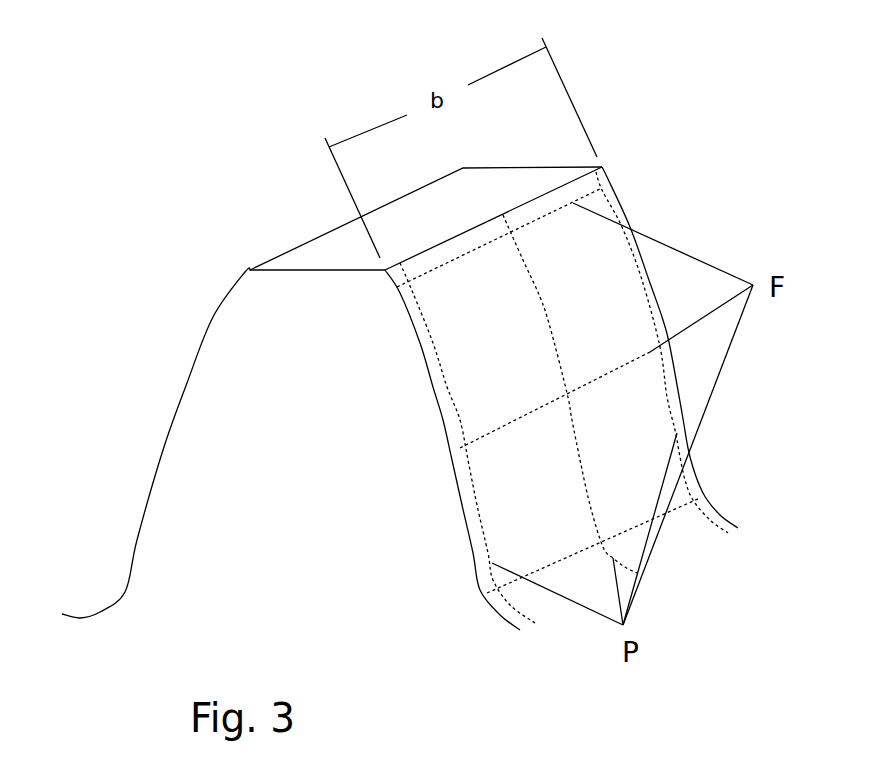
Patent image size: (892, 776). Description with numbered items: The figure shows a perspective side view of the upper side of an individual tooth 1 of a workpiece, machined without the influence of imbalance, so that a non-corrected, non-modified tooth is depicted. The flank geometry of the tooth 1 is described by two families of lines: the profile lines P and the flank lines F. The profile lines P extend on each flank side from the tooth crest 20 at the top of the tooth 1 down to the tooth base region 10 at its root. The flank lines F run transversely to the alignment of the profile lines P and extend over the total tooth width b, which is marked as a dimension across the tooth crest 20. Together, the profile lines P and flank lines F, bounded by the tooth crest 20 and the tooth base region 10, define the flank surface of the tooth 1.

The tooth 1 is at (250, 442).
The tooth crest 20 is at (605, 163).
The tooth base region 10 is at (732, 512).